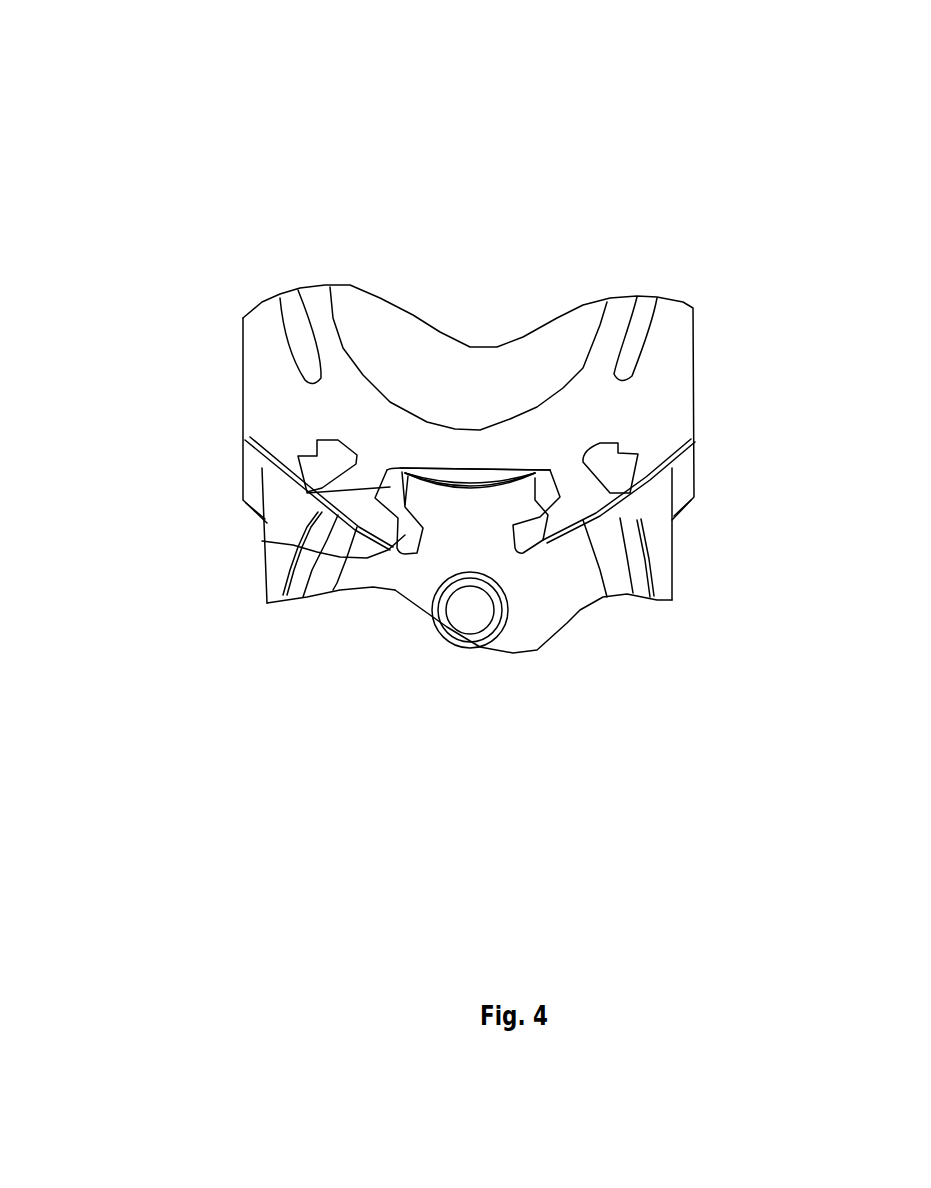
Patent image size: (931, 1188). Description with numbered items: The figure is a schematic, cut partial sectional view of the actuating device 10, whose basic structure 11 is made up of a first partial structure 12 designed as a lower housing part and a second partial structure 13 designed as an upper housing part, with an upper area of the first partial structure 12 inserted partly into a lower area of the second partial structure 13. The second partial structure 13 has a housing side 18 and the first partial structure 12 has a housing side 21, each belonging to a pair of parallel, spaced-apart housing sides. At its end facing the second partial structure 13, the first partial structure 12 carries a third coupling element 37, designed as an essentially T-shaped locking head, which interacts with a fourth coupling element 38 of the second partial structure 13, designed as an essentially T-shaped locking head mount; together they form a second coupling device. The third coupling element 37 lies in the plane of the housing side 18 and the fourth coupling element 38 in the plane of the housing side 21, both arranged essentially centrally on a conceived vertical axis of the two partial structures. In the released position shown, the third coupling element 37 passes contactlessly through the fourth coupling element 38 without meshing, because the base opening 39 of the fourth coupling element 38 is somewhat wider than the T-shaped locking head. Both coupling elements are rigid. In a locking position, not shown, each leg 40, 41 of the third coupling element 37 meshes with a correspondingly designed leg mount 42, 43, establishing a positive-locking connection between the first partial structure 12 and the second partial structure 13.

The actuating device 10 is at (360, 180).
The basic structure 11 is at (165, 480).
The first partial structure 12 is at (673, 583).
The second partial structure 13 is at (697, 380).
The housing side 18 is at (267, 340).
The housing side 21 is at (267, 605).
The third coupling element 37 is at (443, 520).
The fourth coupling element 38 is at (530, 533).
The base opening 39 is at (262, 541).
The leg 40 is at (427, 473).
The leg 41 is at (513, 473).
The leg mount 42 is at (245, 443).
The leg mount 43 is at (693, 437).